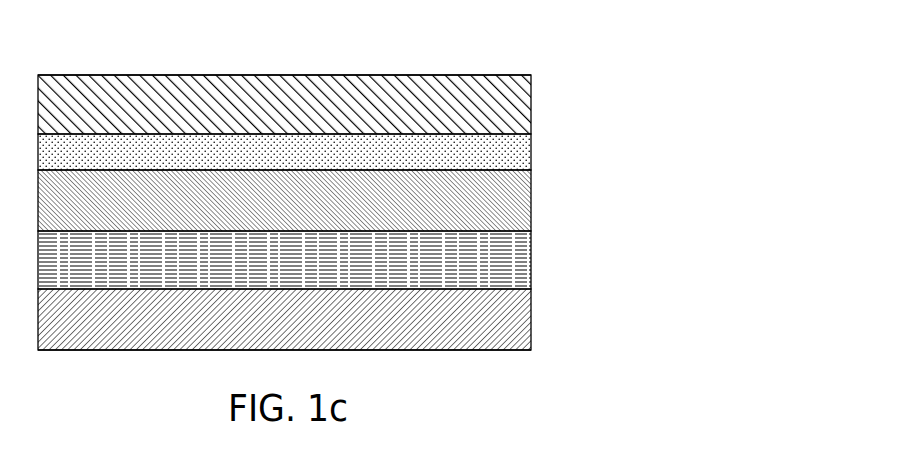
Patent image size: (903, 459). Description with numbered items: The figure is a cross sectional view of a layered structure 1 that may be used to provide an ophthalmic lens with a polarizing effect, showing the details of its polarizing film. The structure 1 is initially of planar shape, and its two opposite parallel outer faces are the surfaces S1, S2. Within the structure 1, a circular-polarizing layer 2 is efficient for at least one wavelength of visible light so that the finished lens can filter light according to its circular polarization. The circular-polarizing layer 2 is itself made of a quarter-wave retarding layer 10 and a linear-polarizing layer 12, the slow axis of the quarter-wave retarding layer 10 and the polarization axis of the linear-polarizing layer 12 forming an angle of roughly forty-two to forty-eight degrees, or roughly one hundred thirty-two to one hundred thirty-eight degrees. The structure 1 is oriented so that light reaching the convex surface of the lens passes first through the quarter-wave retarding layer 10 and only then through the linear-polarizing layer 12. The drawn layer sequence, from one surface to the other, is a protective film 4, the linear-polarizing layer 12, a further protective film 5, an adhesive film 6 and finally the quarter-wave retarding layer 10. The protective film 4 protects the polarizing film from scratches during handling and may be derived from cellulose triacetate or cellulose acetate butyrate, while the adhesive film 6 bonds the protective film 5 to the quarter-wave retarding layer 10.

The layered structure 1 is at (464, 210).
The circular-polarizing layer 2 is at (404, 179).
The protective film 4 is at (344, 319).
The protective film 5 is at (507, 191).
The adhesive film 6 is at (507, 155).
The quarter-wave retarding layer 10 is at (507, 108).
The linear-polarizing layer 12 is at (350, 260).
The surface S1 is at (410, 353).
The surface S2 is at (432, 70).